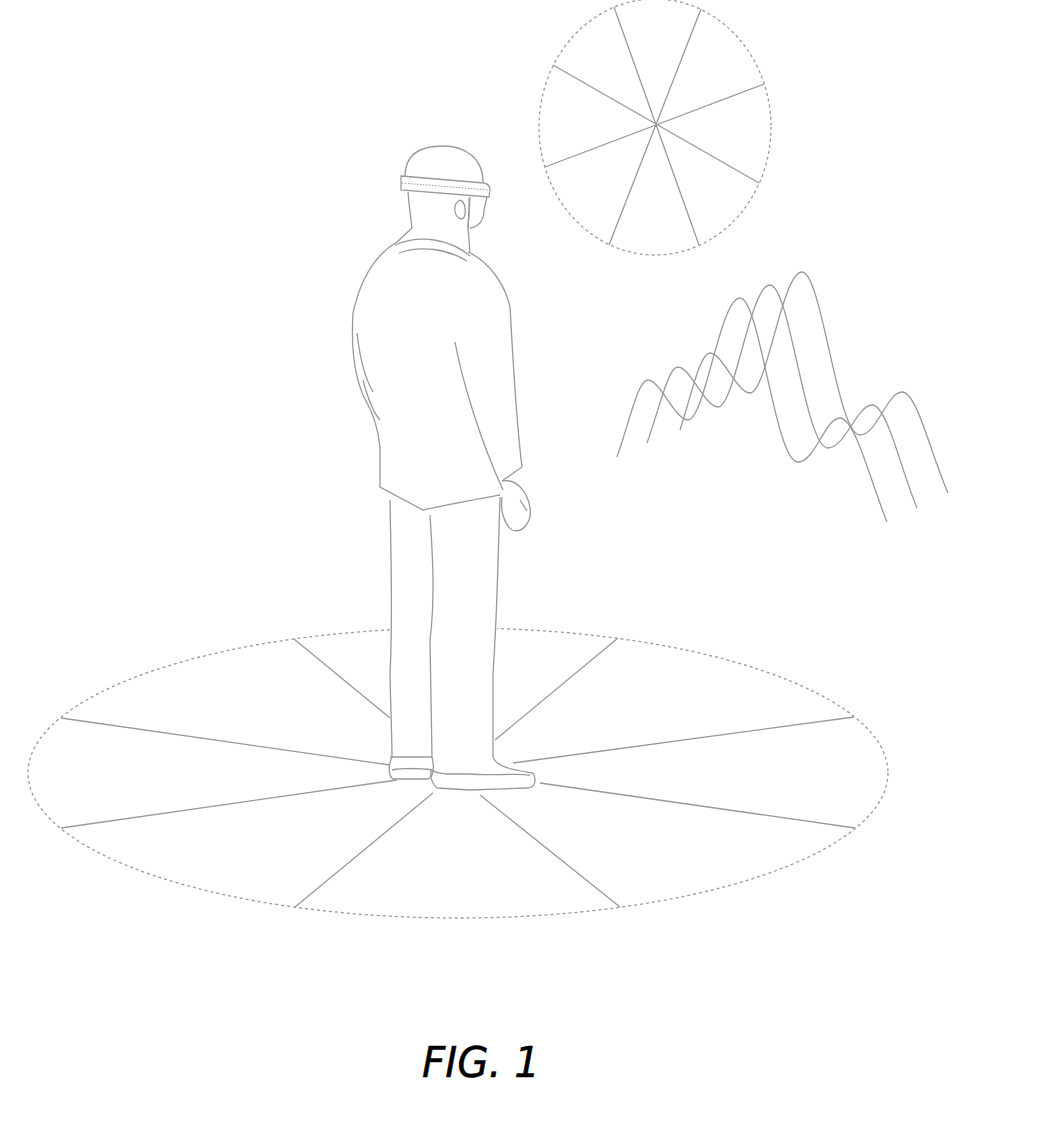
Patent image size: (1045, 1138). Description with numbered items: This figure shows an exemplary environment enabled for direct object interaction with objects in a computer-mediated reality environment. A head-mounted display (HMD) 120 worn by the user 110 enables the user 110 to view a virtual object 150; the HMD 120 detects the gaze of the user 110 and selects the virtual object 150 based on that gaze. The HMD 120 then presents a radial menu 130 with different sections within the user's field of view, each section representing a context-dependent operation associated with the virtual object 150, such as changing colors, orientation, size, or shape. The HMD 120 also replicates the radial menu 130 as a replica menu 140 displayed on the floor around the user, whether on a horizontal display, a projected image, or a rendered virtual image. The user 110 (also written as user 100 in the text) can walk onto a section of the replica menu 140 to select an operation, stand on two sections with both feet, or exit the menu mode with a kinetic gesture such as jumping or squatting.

The user 100 is at (198, 85).
The user 110 is at (416, 469).
The head-mounted display (HMD) 120 is at (403, 183).
The radial menu 130 is at (550, 62).
The replica menu 140 is at (237, 648).
The virtual object 150 is at (638, 393).